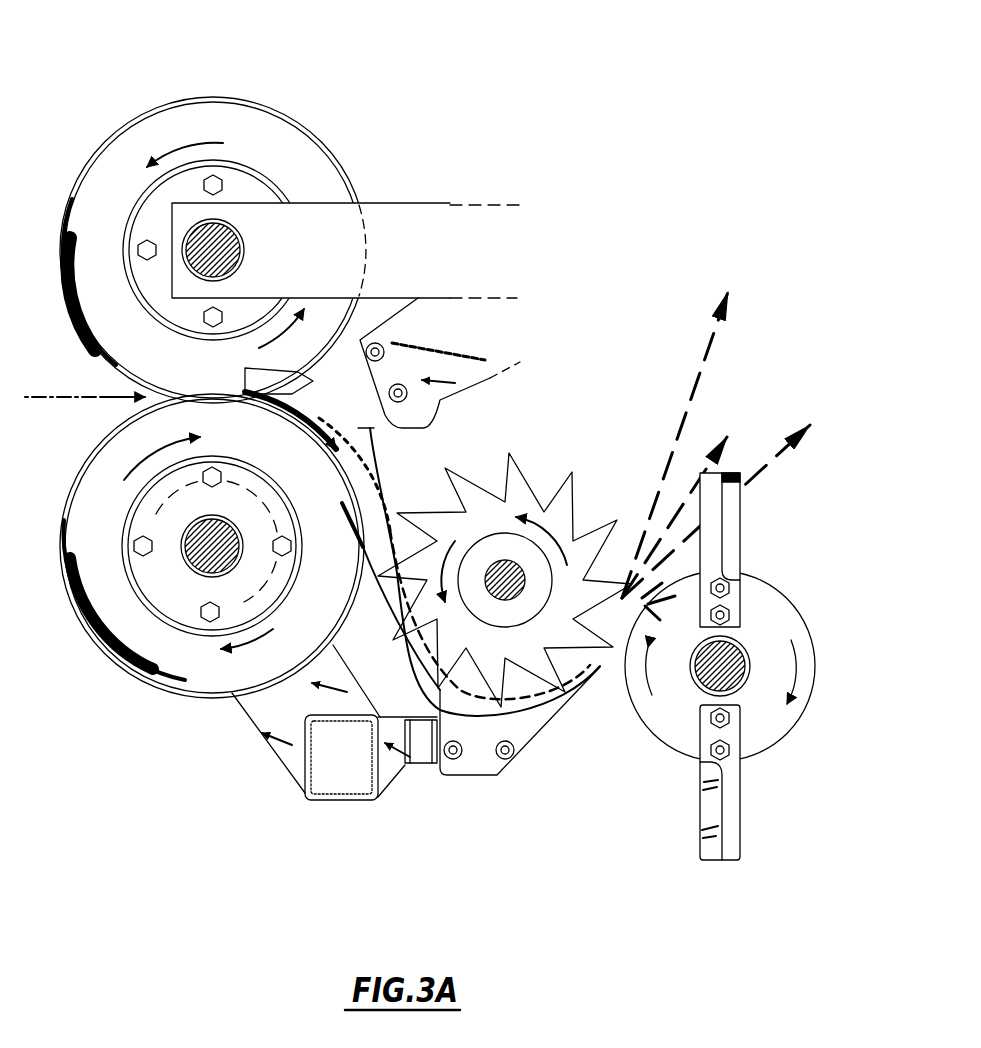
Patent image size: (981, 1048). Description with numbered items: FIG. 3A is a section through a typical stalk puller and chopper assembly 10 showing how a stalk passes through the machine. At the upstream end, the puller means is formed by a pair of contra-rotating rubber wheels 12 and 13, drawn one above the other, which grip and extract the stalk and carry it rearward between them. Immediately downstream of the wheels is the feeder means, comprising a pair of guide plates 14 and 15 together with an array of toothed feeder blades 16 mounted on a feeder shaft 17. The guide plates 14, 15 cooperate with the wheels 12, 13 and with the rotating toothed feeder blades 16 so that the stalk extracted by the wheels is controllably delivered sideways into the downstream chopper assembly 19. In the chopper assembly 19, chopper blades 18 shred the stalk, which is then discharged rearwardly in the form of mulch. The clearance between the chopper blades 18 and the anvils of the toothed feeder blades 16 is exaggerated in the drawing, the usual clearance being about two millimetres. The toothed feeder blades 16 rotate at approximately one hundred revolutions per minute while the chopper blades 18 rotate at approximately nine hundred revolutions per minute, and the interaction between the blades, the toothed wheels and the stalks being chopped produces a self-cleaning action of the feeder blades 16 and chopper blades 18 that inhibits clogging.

The stalk puller and chopper assembly 10 is at (218, 835).
The rubber wheel 12 is at (205, 677).
The rubber wheel 13 is at (297, 138).
The guide plate 14 is at (357, 428).
The guide plate 15 is at (532, 733).
The toothed feeder blades 16 is at (576, 398).
The feeder shaft 17 is at (507, 573).
The chopper blades 18 is at (733, 527).
The chopper assembly 19 is at (773, 773).